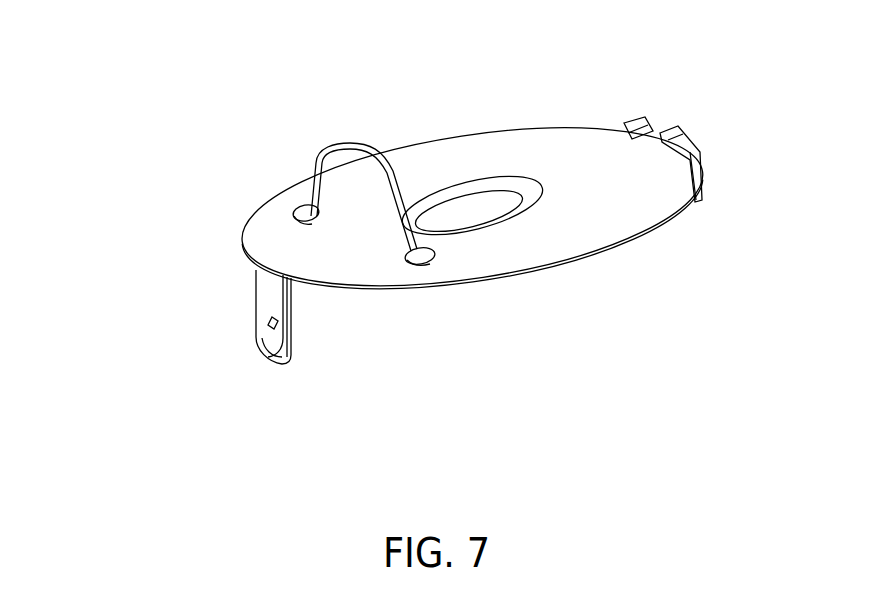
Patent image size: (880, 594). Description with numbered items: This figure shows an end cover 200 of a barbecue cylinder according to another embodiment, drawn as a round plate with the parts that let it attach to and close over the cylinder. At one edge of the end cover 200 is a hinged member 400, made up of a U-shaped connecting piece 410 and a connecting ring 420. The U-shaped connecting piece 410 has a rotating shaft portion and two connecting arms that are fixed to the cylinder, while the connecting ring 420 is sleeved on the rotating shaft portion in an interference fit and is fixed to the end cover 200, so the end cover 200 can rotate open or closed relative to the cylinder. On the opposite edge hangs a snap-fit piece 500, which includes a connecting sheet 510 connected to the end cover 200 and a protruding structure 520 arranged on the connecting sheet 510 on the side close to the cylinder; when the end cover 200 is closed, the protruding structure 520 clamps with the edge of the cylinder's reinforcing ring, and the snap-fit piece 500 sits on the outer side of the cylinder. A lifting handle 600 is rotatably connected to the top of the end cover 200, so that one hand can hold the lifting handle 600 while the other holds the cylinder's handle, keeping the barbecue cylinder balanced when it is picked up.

The end cover 200 is at (553, 142).
The hinged member 400 is at (728, 108).
The U-shaped connecting piece 410 is at (657, 134).
The connecting ring 420 is at (678, 138).
The snap-fit piece 500 is at (165, 349).
The connecting sheet 510 is at (270, 297).
The protruding structure 520 is at (273, 322).
The lifting handle 600 is at (353, 148).